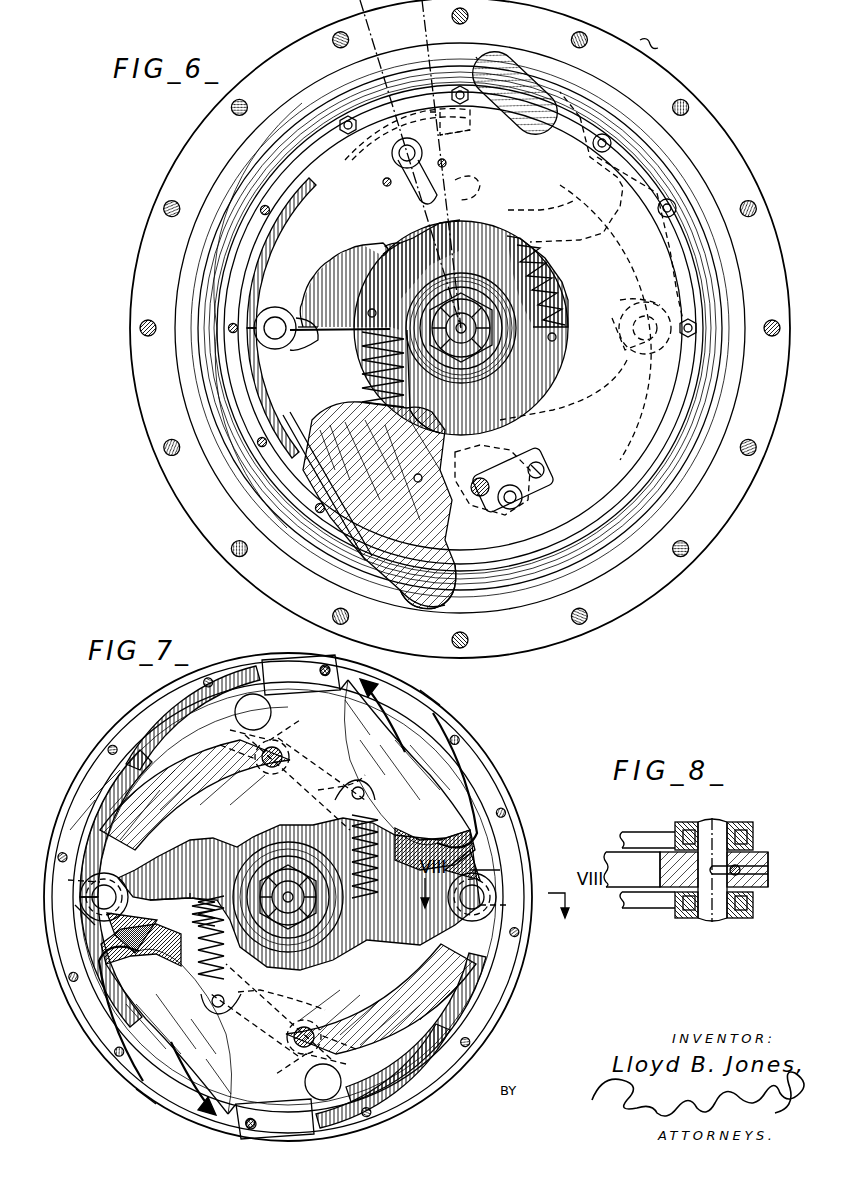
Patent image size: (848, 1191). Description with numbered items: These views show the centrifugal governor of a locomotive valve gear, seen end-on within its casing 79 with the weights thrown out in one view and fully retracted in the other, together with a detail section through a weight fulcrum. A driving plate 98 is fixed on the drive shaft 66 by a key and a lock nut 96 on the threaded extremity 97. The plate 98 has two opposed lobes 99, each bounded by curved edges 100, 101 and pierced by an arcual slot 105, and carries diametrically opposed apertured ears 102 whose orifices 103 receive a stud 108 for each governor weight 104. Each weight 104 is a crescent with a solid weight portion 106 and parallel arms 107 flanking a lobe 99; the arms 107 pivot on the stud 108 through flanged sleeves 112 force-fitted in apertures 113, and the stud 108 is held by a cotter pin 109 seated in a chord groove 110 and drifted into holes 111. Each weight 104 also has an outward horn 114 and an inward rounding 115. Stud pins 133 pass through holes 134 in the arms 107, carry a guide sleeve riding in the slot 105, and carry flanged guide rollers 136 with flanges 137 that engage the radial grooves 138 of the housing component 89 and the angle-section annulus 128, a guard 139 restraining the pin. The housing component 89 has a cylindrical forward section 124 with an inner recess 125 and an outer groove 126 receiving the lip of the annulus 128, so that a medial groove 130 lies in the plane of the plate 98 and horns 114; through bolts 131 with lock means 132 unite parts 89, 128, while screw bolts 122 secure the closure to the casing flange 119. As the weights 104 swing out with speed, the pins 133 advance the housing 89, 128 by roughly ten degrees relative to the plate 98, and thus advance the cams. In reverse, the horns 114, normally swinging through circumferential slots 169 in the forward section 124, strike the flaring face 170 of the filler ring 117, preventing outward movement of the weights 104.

In FIG. 6, the drive shaft 66 is at (461, 320).
In FIG. 6, the casing 79 is at (661, 33).
In FIG. 7, the governor housing component 89 is at (465, 788).
In FIG. 6, the lock nut 96 is at (430, 300).
In FIG. 7, the lock nut 96 is at (320, 915).
In FIG. 6, the screw-threaded extremity 97 is at (470, 300).
In FIG. 7, the screw-threaded extremity 97 is at (310, 903).
In FIG. 6, the driving member or plate 98 is at (568, 288).
In FIG. 7, the driving member or plate 98 is at (205, 928).
In FIG. 8, the driving member or plate 98 is at (606, 854).
In FIG. 6, the lobes 99 is at (429, 326).
In FIG. 7, the lobes 99 is at (299, 894).
In FIG. 6, the curved edge 100 is at (262, 268).
In FIG. 7, the curved edge 100 is at (150, 722).
In FIG. 6, the curved edge 101 is at (378, 392).
In FIG. 7, the curved edge 101 is at (318, 790).
In FIG. 6, the apertured ears 102 is at (240, 342).
In FIG. 7, the apertured ears 102 is at (80, 920).
In FIG. 8, the apertured ears 102 is at (770, 858).
In FIG. 8, the orifices 103 is at (658, 871).
In FIG. 6, the governor weights 104 is at (415, 338).
In FIG. 7, the governor weights 104 is at (286, 900).
In FIG. 6, the arcual slot 105 is at (442, 489).
In FIG. 7, the arcual slot 105 is at (290, 891).
In FIG. 6, the weight 106 is at (474, 325).
In FIG. 7, the weight 106 is at (402, 800).
In FIG. 6, the parallel arms 107 is at (362, 300).
In FIG. 7, the parallel arms 107 is at (90, 832).
In FIG. 8, the parallel arms 107 is at (614, 834).
In FIG. 6, the stud 108 is at (312, 352).
In FIG. 7, the stud 108 is at (110, 880).
In FIG. 8, the stud 108 is at (720, 830).
In FIG. 6, the cotter pin 109 is at (290, 350).
In FIG. 7, the cotter pin 109 is at (82, 902).
In FIG. 8, the cotter pin 109 is at (752, 860).
In FIG. 7, the chord groove 110 is at (169, 884).
In FIG. 8, the chord groove 110 is at (740, 875).
In FIG. 7, the holes 111 is at (68, 880).
In FIG. 8, the holes 111 is at (766, 872).
In FIG. 6, the flanged sleeves 112 is at (280, 318).
In FIG. 7, the flanged sleeves 112 is at (472, 922).
In FIG. 8, the flanged sleeves 112 is at (695, 820).
In FIG. 7, the apertures 113 is at (172, 860).
In FIG. 8, the apertures 113 is at (680, 832).
In FIG. 6, the projection or horn 114 is at (484, 52).
In FIG. 7, the projection or horn 114 is at (395, 682).
In FIG. 6, the inwardly active rounding 115 is at (326, 416).
In FIG. 7, the inwardly active rounding 115 is at (482, 840).
In FIG. 6, the filler ring 117 is at (314, 84).
In FIG. 6, the flange 119 is at (668, 80).
In FIG. 6, the screw bolts 122 is at (690, 99).
In FIG. 6, the cylindrical forward section 124 is at (236, 282).
In FIG. 7, the cylindrical forward section 124 is at (492, 798).
In FIG. 6, the inner recess 125 is at (252, 377).
In FIG. 7, the inner recess 125 is at (500, 850).
In FIG. 6, the outer circumferential groove 126 is at (252, 398).
In FIG. 7, the outer circumferential groove 126 is at (520, 956).
In FIG. 6, the angle-section annulus 128 is at (690, 286).
In FIG. 6, the medial groove 130 is at (248, 358).
In FIG. 7, the medial groove 130 is at (102, 762).
In FIG. 6, the through bolts 131 is at (612, 142).
In FIG. 7, the through bolts 131 is at (462, 736).
In FIG. 6, the lock means 132 is at (672, 202).
In FIG. 6, the stud pins 133 is at (396, 154).
In FIG. 7, the stud pins 133 is at (262, 762).
In FIG. 7, the holes 134 is at (290, 768).
In FIG. 6, the rotary guide rollers 136 is at (412, 166).
In FIG. 7, the rotary guide rollers 136 is at (252, 752).
In FIG. 6, the flanges 137 is at (448, 164).
In FIG. 6, the radial registering grooves 138 is at (412, 198).
In FIG. 7, the radial registering grooves 138 is at (277, 690).
In FIG. 6, the guard 139 is at (538, 495).
In FIG. 6, the circumferential slots 169 is at (603, 107).
In FIG. 7, the circumferential slots 169 is at (430, 710).
In FIG. 6, the flaring face 170 is at (258, 146).